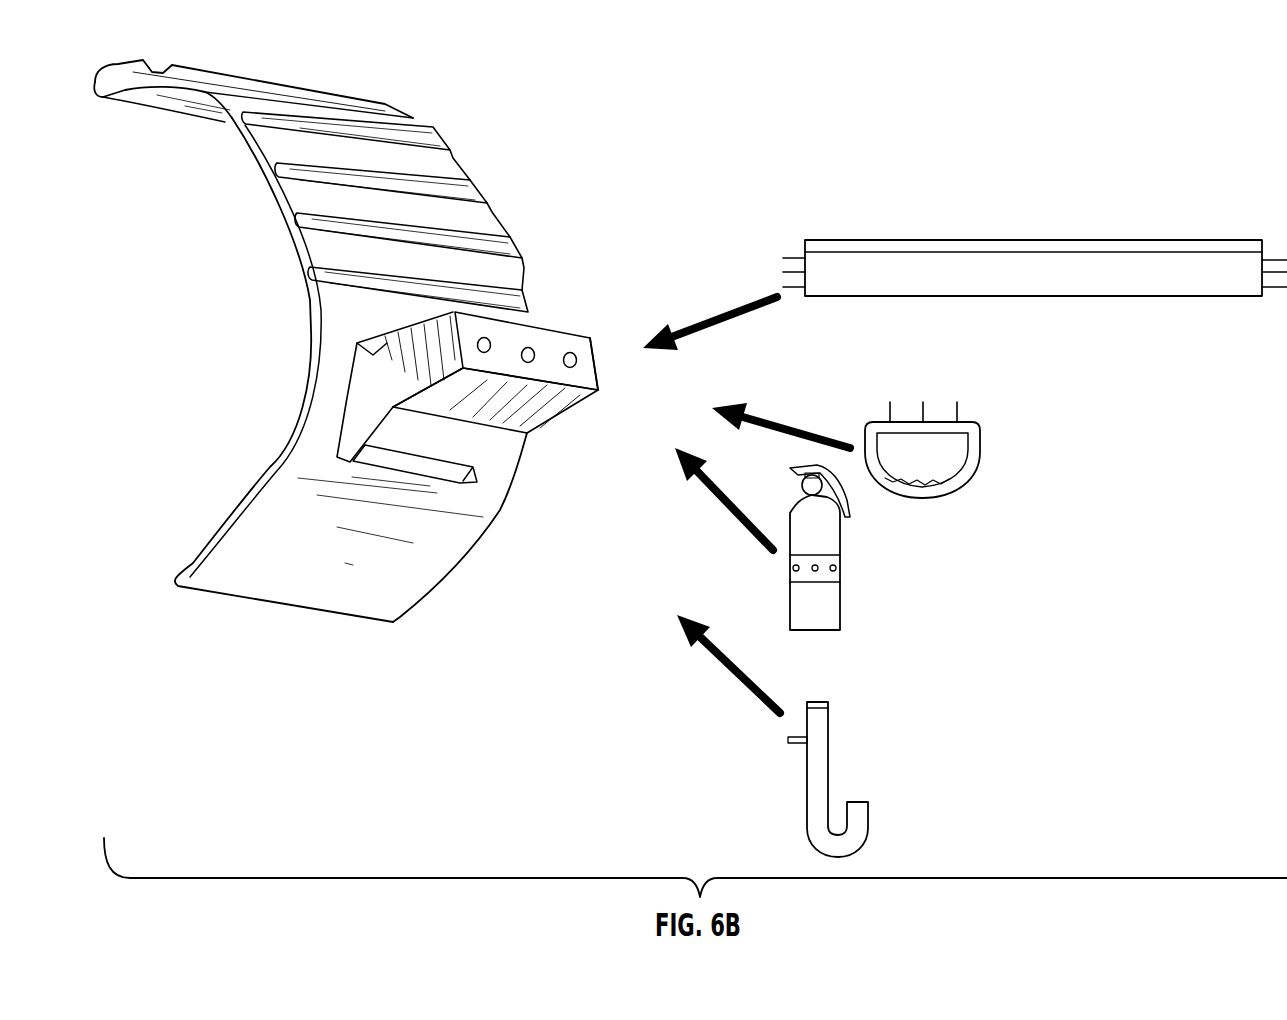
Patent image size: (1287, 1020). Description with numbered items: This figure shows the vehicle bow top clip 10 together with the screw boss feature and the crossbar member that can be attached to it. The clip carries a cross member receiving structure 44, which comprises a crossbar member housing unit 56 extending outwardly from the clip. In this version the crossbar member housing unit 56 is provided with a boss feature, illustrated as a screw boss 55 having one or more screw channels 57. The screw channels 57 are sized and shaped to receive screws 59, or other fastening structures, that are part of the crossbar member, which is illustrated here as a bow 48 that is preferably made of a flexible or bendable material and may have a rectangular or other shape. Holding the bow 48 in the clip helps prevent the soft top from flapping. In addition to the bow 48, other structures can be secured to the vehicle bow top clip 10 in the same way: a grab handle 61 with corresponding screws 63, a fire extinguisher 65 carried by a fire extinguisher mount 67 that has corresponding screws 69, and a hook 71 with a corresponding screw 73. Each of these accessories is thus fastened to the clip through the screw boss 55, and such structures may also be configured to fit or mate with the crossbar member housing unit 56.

The vehicle bow top clip 10 is at (196, 268).
The cross member receiving structure 44 is at (572, 410).
The bow 48 is at (1128, 297).
The screw boss 55 is at (542, 347).
The crossbar member housing unit 56 is at (583, 334).
The screw channels 57 is at (477, 346).
The screws 59 is at (794, 257).
The grab handle 61 is at (977, 477).
The screws 63 is at (957, 412).
The fire extinguisher 65 is at (842, 598).
The fire extinguisher mount 67 is at (842, 562).
The screws 69 is at (791, 568).
The hook 71 is at (868, 818).
The screw 73 is at (795, 737).